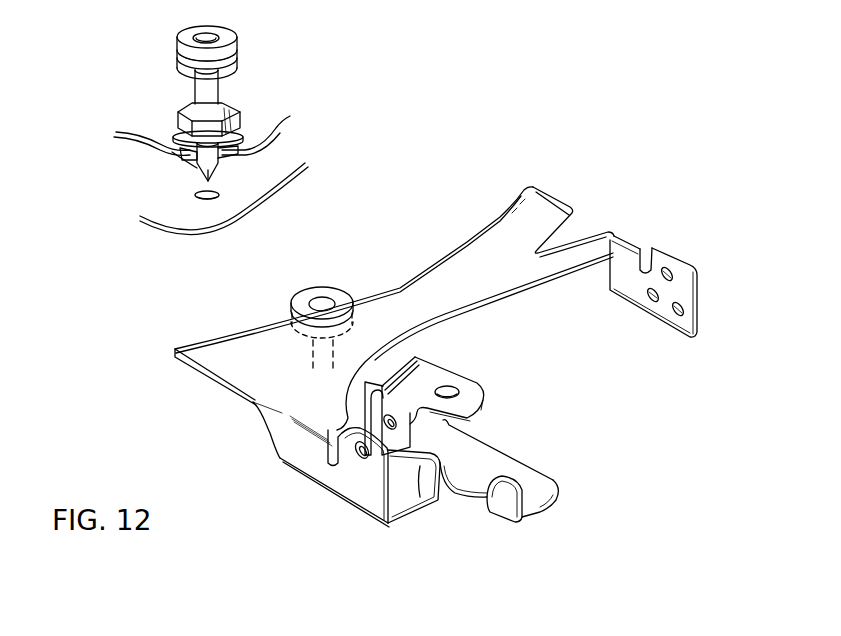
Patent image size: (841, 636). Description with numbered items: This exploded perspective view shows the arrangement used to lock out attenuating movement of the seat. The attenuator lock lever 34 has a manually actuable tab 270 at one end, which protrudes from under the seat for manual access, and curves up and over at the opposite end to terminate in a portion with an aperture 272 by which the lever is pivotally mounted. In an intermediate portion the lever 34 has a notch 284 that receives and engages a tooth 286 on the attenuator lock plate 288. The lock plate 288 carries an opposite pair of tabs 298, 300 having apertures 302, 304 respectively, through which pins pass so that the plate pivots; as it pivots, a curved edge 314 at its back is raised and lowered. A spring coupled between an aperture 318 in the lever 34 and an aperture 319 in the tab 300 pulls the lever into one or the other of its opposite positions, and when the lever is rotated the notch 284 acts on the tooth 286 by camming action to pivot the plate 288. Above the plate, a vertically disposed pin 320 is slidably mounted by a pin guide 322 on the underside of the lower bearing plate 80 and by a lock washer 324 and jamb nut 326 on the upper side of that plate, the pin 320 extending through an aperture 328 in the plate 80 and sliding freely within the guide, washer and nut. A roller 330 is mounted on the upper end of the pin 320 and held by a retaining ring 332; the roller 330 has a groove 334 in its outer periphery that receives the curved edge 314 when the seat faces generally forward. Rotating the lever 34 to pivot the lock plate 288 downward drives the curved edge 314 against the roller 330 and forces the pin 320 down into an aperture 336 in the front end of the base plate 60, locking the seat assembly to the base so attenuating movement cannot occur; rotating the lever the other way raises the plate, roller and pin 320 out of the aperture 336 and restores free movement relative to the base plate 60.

The attenuator lock lever 34 is at (503, 461).
The base plate 60 is at (178, 222).
The lower bearing plate 80 is at (266, 133).
The manually actuable tab 270 is at (500, 497).
The aperture 272 is at (450, 388).
The notch 284 is at (475, 444).
The tooth 286 is at (437, 490).
The attenuator lock plate 288 is at (279, 423).
The tab 298 is at (373, 480).
The tab 300 is at (685, 303).
The aperture 302 is at (342, 470).
The aperture 304 is at (667, 273).
The curved edge 314 is at (450, 255).
The aperture 318 is at (394, 420).
The aperture 319 is at (675, 313).
The pin 320 is at (214, 167).
The pin guide 322 is at (183, 165).
The lock washer 324 is at (241, 131).
The jamb nut 326 is at (228, 106).
The aperture 328 is at (182, 146).
The roller 330 is at (226, 74).
The retaining ring 332 is at (222, 35).
The groove 334 is at (177, 58).
The aperture 336 is at (222, 196).